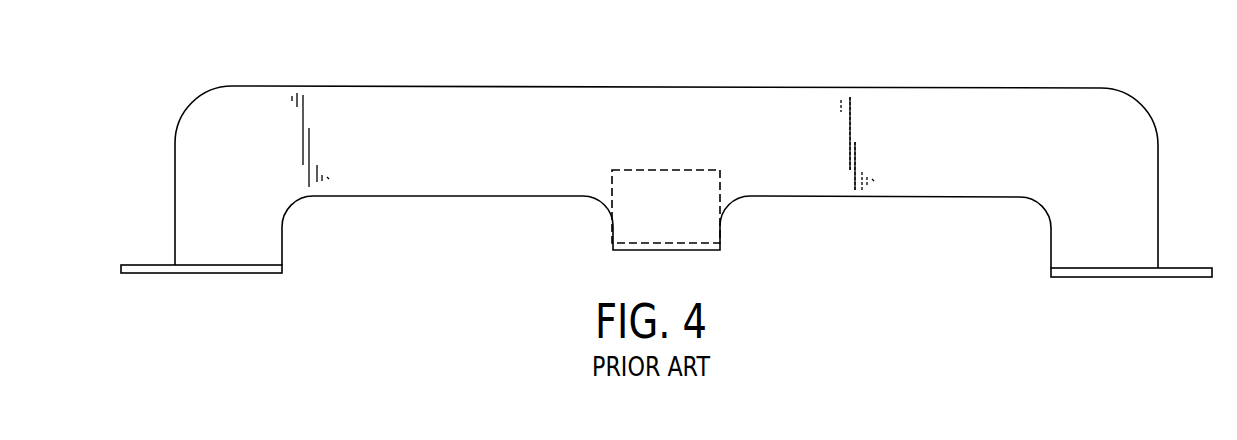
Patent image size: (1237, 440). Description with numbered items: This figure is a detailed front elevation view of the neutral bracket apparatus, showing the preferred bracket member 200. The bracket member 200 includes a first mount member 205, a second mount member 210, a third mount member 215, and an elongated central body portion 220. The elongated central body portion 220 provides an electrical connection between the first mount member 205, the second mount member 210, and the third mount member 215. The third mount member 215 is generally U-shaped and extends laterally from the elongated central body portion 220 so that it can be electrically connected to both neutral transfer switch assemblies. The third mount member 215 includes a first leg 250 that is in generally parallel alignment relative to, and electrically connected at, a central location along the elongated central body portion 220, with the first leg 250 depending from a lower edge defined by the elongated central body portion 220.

The bracket member 200 is at (1123, 66).
The first mount member 205 is at (163, 265).
The second mount member 210 is at (1183, 267).
The third mount member 215 is at (723, 240).
The elongated central body portion 220 is at (552, 117).
The first leg 250 is at (612, 240).